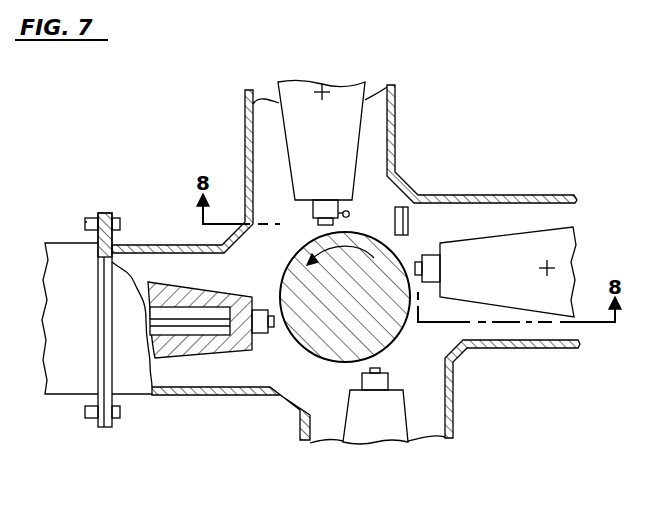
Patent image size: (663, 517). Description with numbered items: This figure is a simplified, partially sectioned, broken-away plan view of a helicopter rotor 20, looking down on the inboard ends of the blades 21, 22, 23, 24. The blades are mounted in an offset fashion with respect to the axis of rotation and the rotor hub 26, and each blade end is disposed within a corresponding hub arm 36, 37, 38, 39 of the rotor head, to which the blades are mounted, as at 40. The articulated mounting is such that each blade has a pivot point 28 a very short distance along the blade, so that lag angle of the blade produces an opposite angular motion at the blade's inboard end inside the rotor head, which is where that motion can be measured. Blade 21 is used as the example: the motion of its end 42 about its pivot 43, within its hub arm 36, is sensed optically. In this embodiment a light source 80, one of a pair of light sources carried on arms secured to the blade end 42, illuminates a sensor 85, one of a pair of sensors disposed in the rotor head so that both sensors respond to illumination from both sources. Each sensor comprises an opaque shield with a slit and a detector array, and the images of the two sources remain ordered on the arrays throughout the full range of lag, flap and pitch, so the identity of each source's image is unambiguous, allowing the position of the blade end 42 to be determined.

The helicopter rotor 20 is at (346, 269).
The blade 21 is at (292, 137).
The blade 22 is at (66, 245).
The blade 23 is at (373, 433).
The blade 24 is at (510, 272).
The rotor hub 26 is at (482, 146).
The pivot point 28 is at (545, 265).
The hub arm 36 is at (256, 100).
The hub arm 37 is at (163, 250).
The hub arm 38 is at (449, 441).
The hub arm 39 is at (532, 207).
The blade mounting 40 is at (103, 212).
The blade end 42 is at (313, 211).
The pivot 43 is at (322, 92).
The light source 80 is at (349, 213).
The sensor 85 is at (410, 220).